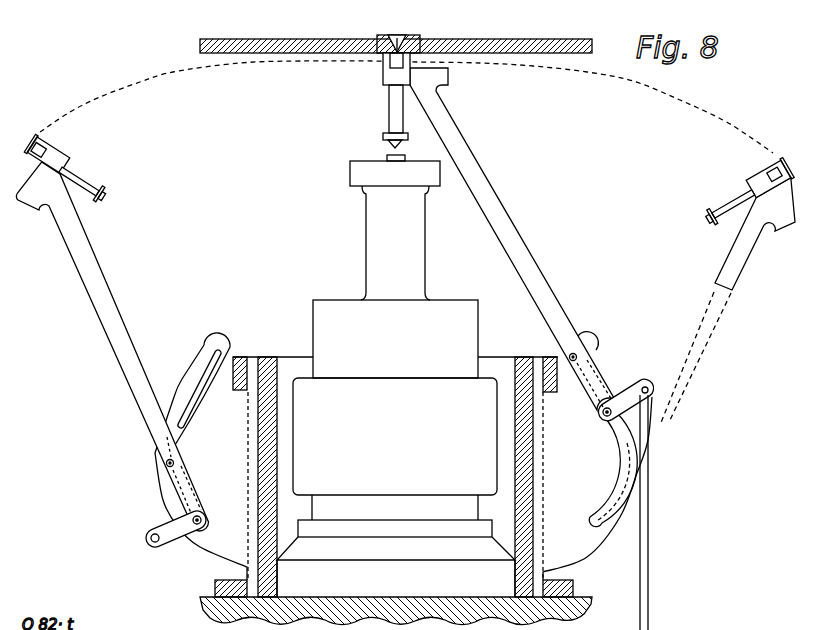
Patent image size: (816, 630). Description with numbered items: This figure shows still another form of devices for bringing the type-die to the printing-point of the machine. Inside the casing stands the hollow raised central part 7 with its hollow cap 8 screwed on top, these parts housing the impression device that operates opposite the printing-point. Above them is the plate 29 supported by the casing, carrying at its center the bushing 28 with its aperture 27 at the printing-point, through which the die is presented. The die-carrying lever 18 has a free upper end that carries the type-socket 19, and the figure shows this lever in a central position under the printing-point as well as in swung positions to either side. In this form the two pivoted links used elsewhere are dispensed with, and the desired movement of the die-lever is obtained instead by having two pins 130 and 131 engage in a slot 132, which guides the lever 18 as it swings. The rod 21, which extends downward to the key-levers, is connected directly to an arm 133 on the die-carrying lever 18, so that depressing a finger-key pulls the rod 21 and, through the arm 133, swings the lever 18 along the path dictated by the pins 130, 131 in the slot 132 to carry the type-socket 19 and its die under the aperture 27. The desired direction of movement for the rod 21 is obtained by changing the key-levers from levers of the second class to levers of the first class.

The raised central part 7 is at (396, 487).
The cap 8 is at (387, 266).
The lever 18 is at (405, 299).
The type-socket 19 is at (383, 78).
The rod 21 is at (658, 512).
The aperture 27 is at (399, 34).
The bushing 28 is at (387, 35).
The plate 29 is at (200, 46).
The pin 130 is at (176, 462).
The pin 131 is at (203, 512).
The slot 132 is at (190, 398).
The arm 133 is at (183, 541).